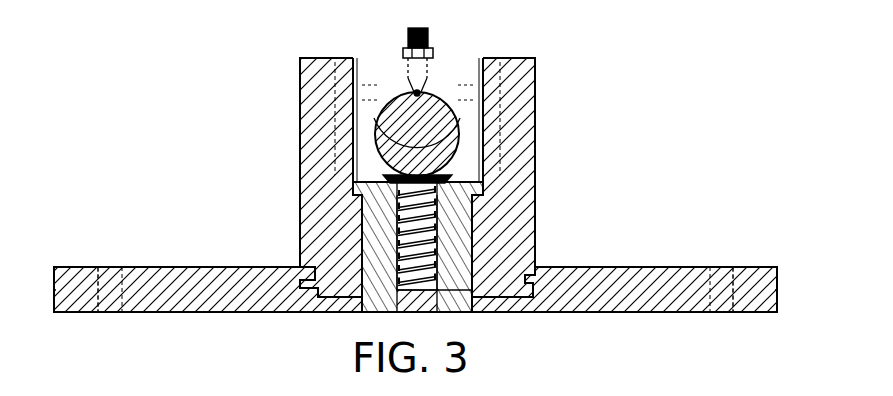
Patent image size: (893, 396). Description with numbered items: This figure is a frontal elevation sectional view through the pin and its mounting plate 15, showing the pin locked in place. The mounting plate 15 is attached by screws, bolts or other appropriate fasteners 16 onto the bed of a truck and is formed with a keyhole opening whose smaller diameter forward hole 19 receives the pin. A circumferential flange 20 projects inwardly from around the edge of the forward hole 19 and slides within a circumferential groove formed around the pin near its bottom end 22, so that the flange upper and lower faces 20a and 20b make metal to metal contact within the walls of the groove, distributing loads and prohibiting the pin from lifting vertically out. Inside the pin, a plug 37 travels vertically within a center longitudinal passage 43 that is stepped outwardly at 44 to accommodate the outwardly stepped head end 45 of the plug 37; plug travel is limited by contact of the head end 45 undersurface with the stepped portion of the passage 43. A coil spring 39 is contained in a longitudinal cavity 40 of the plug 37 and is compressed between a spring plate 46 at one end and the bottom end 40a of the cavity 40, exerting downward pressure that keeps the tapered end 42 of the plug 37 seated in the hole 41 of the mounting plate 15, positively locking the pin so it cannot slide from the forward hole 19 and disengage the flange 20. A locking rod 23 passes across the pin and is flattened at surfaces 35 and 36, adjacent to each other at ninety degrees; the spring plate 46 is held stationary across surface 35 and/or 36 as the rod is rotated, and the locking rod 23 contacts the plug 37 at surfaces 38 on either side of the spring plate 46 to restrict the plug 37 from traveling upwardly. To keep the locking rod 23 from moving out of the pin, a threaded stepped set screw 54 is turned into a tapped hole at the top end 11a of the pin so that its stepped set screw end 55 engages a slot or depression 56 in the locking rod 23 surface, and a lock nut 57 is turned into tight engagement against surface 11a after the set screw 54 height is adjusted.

The top end of pin 11a is at (517, 60).
The mounting plate 15 is at (203, 298).
The fasteners 16 is at (98, 267).
The forward hole 19 is at (337, 297).
The circumferential flange 20 is at (537, 260).
The flange upper face 20a is at (300, 267).
The flange lower face 20b is at (300, 292).
The bottom end of pin 22 is at (496, 312).
The locking rod 23 is at (460, 107).
The flattened surface of locking rod 35 is at (458, 150).
The flattened surface of locking rod 36 is at (377, 150).
The plug 37 is at (465, 222).
The plug surfaces 38 is at (455, 176).
The coil spring 39 is at (470, 240).
The longitudinal cavity 40 is at (395, 172).
The bottom end of cavity 40a is at (418, 305).
The mounting plate hole 41 is at (362, 306).
The tapered end of plug 42 is at (458, 305).
The center longitudinal passage 43 is at (305, 210).
The outward step of passage 44 is at (353, 190).
The stepped head end of plug 45 is at (485, 183).
The spring plate 46 is at (353, 142).
The stepped set screw 54 is at (433, 50).
The stepped set screw end 55 is at (425, 80).
The slot or depression 56 is at (415, 92).
The lock nut 57 is at (405, 52).